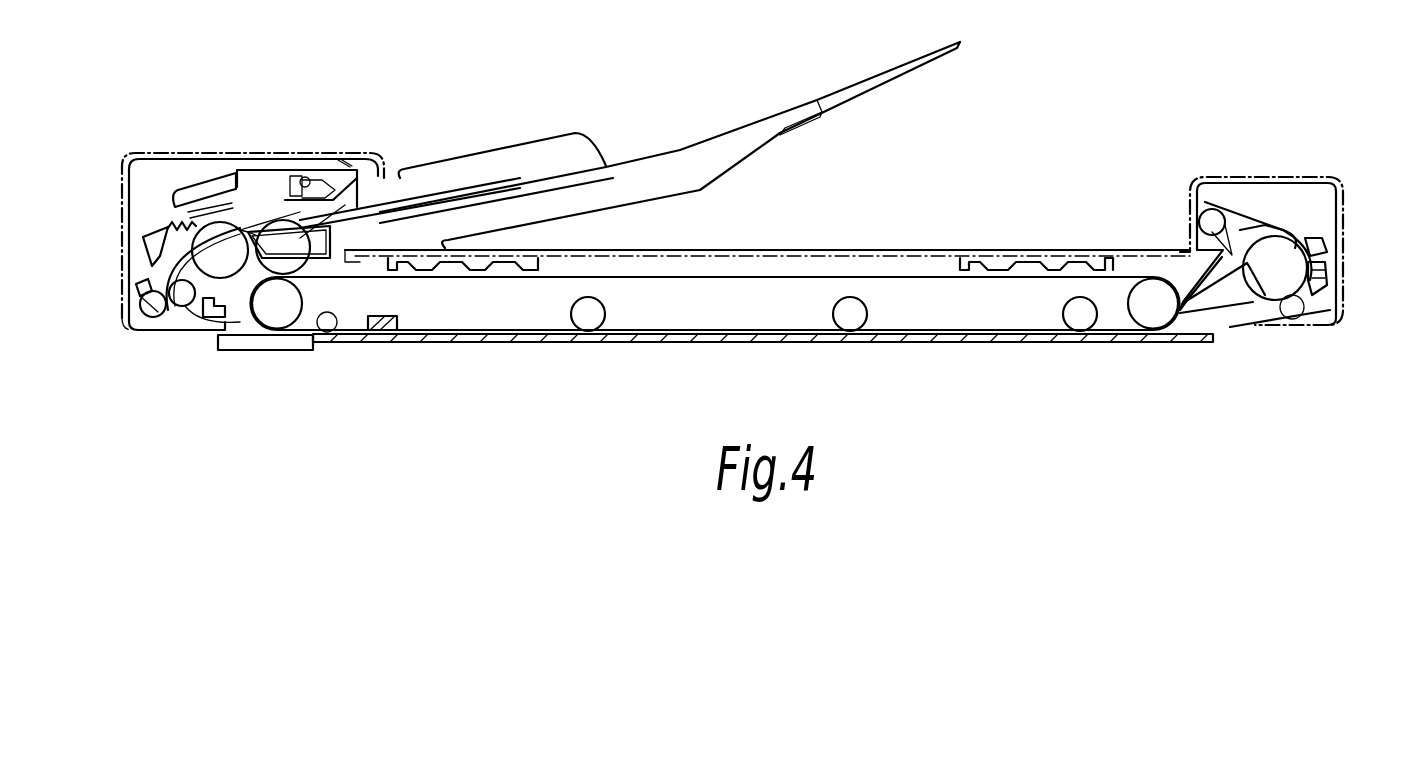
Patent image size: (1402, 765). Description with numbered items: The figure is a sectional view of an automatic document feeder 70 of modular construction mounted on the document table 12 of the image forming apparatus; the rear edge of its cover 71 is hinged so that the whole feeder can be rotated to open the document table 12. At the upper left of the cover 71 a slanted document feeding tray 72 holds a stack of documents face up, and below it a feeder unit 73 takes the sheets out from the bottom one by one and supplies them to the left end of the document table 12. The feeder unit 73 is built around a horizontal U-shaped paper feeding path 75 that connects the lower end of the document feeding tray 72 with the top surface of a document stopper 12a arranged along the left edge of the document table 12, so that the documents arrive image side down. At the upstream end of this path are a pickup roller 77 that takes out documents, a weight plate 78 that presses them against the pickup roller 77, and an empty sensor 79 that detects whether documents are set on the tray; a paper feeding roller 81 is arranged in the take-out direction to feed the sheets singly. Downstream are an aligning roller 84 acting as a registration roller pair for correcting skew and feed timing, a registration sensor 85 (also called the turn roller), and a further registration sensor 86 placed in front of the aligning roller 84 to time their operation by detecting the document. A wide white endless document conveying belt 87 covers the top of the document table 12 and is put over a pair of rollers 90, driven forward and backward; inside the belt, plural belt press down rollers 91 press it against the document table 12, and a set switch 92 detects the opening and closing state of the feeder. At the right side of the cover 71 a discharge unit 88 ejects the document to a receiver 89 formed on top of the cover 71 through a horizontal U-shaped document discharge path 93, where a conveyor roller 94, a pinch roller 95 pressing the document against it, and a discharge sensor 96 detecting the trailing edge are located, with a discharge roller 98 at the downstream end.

The document table 12 is at (510, 340).
The document stopper 12a is at (292, 340).
The automatic document feeder 70 is at (913, 238).
The cover 71 is at (248, 152).
The document feeding tray 72 is at (698, 137).
The feeder unit 73 is at (168, 166).
The paper feeding path 75 is at (168, 243).
The pickup roller 77 is at (392, 187).
The weight plate 78 is at (290, 236).
The empty sensor 79 is at (297, 178).
The paper feeding roller 81 is at (230, 260).
The aligning roller 84 is at (182, 296).
The registration sensor 85 is at (153, 307).
The registration sensor 86 is at (136, 290).
The document conveying belt 87 is at (775, 338).
The discharge unit 88 is at (1340, 243).
The receiver 89 is at (995, 250).
The rollers 90 is at (290, 307).
The belt press down rollers 91 is at (590, 316).
The set switch 92 is at (383, 324).
The document discharge path 93 is at (1318, 280).
The conveyor roller 94 is at (1280, 285).
The pinch roller 95 is at (1303, 234).
The discharge sensor 96 is at (1243, 232).
The discharge roller 98 is at (1207, 220).